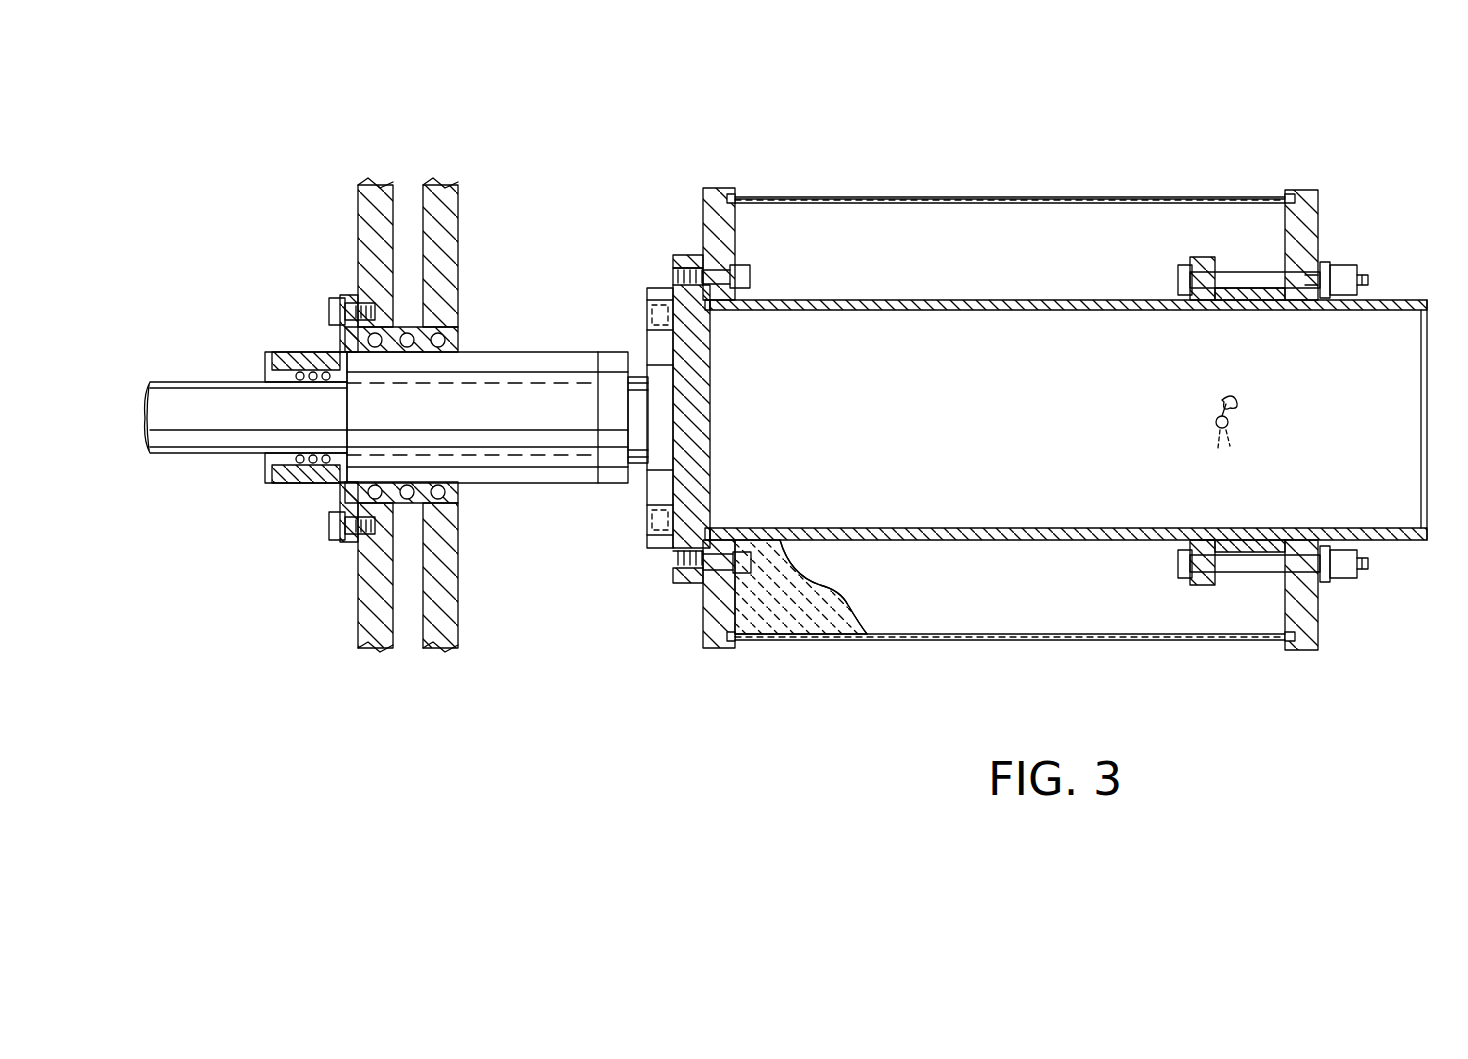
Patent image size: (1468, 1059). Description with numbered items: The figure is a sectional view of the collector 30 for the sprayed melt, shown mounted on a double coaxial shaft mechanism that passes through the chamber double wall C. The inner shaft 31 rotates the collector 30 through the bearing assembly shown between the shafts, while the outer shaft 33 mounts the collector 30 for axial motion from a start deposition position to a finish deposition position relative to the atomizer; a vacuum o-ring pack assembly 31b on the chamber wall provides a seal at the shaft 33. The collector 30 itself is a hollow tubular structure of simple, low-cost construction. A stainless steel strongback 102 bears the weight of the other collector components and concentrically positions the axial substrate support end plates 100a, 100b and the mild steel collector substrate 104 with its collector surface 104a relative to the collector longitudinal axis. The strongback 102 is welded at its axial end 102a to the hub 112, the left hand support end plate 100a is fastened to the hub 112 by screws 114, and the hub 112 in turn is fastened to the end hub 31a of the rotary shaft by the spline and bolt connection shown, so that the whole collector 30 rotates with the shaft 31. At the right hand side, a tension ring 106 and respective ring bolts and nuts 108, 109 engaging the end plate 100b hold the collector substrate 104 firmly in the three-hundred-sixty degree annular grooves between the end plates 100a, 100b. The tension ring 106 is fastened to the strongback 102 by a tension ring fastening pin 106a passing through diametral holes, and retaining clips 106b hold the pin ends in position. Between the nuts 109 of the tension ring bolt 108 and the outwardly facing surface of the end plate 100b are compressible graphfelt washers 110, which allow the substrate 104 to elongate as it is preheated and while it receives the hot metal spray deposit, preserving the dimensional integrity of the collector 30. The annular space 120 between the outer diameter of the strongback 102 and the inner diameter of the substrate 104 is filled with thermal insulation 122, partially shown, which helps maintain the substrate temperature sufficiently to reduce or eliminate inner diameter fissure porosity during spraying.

The wall / partition C is at (440, 181).
The collector 30 is at (1308, 684).
The inner shaft 31 is at (166, 460).
The end hub 31a is at (657, 345).
The vacuum o-ring pack assembly 31b is at (340, 348).
The outer shaft 33 is at (557, 486).
The left hand support end plate 100a is at (718, 188).
The right hand end plate 100b is at (1298, 190).
The strongback 102 is at (895, 527).
The axial end of strongback 102a is at (713, 527).
The collector substrate 104 is at (1017, 648).
The collector surface 104a is at (852, 643).
The tension ring 106 is at (1205, 540).
The tension ring fastening pin 106a is at (1215, 418).
The retaining clips 106b is at (1236, 396).
The ring bolts 108 is at (1236, 584).
The nuts 109 is at (1346, 582).
The graphfelt washers 110 is at (1332, 265).
The hub 112 is at (712, 366).
The screws 114 is at (753, 278).
The annular space 120 is at (930, 223).
The thermal insulation 122 is at (806, 610).